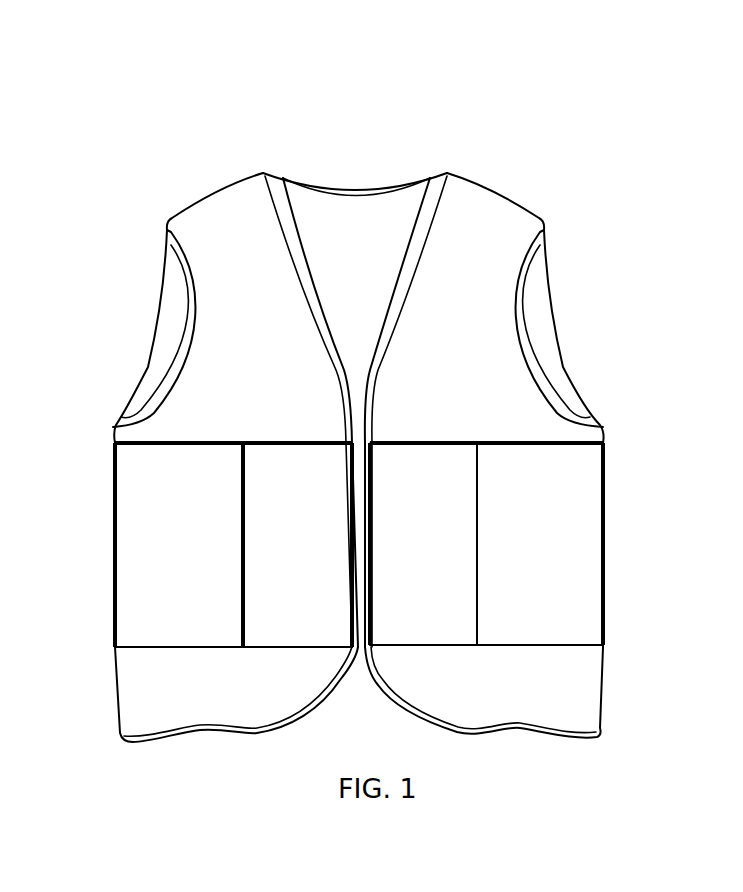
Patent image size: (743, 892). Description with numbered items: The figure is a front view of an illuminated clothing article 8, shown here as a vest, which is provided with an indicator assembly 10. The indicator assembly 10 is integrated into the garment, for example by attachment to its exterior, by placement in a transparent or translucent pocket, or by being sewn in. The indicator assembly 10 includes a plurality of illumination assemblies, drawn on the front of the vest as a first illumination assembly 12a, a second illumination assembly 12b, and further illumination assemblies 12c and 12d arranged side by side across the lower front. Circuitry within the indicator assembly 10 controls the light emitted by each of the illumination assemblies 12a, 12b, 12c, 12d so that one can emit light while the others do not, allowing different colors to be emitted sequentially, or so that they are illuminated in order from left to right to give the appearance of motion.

The illuminated clothing article 8 is at (222, 112).
The indicator assembly 10 is at (578, 476).
The first illumination assembly 12a is at (203, 527).
The second illumination assembly 12b is at (335, 527).
The pocket compartment 12c is at (465, 525).
The pocket compartment 12d is at (574, 525).